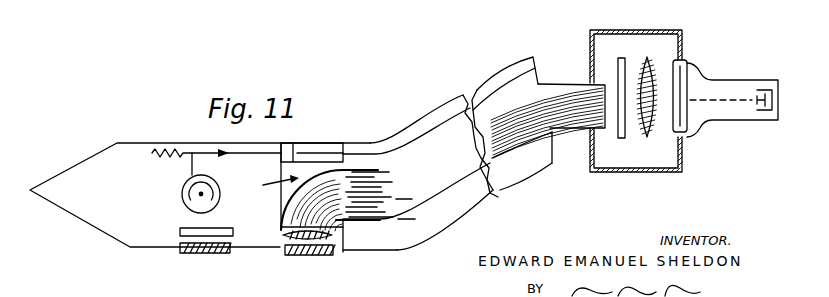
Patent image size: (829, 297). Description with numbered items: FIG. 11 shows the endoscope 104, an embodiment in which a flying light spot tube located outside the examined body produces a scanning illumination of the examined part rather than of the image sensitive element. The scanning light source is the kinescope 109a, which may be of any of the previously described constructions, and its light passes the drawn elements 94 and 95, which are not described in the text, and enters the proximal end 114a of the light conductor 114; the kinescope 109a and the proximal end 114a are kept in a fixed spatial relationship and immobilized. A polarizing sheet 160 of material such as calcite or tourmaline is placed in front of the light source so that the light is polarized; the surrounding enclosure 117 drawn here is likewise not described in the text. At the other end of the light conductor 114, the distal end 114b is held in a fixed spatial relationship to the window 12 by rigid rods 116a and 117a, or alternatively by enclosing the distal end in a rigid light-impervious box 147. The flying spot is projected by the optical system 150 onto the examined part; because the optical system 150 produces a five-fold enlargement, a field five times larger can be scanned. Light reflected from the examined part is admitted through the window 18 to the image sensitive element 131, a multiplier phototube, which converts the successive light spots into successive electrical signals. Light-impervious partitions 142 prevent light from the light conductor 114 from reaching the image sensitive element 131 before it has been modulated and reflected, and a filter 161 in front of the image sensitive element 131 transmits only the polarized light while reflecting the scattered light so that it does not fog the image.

The endoscope 104 is at (129, 168).
The image sensitive element 131 is at (184, 204).
The rigid light-impervious box 147 is at (267, 184).
The light-impervious partitions 142 is at (298, 148).
The filter 161 is at (180, 233).
The window 18 is at (201, 254).
The optical system 150 is at (285, 237).
The window 12 is at (308, 257).
The distal end of the light conductor 114b is at (336, 224).
The rigid rod 117a is at (346, 251).
The rigid rod 116a is at (348, 150).
The light conductor 114 is at (438, 195).
The proximal end of the light conductor 114a is at (612, 80).
The housing 117 is at (613, 45).
The polarizing sheet 160 is at (590, 167).
The lens 94 is at (675, 87).
The window 95 is at (688, 66).
The kinescope 109a is at (722, 89).